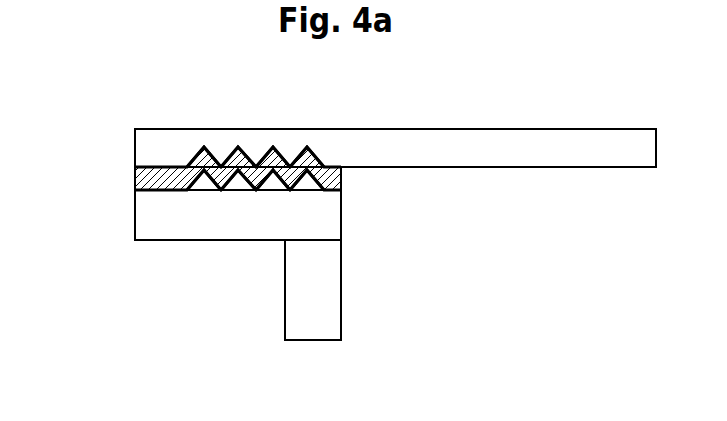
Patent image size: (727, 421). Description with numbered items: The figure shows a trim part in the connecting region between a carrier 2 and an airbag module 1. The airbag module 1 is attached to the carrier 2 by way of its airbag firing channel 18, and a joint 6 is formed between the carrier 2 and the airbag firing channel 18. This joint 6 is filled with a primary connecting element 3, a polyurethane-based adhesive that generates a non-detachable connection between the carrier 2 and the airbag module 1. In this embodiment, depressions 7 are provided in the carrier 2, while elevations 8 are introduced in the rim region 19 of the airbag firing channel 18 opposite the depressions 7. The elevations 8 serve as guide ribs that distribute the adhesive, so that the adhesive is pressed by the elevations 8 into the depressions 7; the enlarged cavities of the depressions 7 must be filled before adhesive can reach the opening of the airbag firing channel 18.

The airbag module 1 is at (406, 271).
The carrier 2 is at (152, 148).
The primary connecting element 3 is at (148, 177).
The joint 6 is at (356, 178).
The depressions 7 is at (204, 147).
The elevations 8 is at (202, 181).
The airbag firing channel 18 is at (323, 300).
The rim region 19 is at (145, 211).